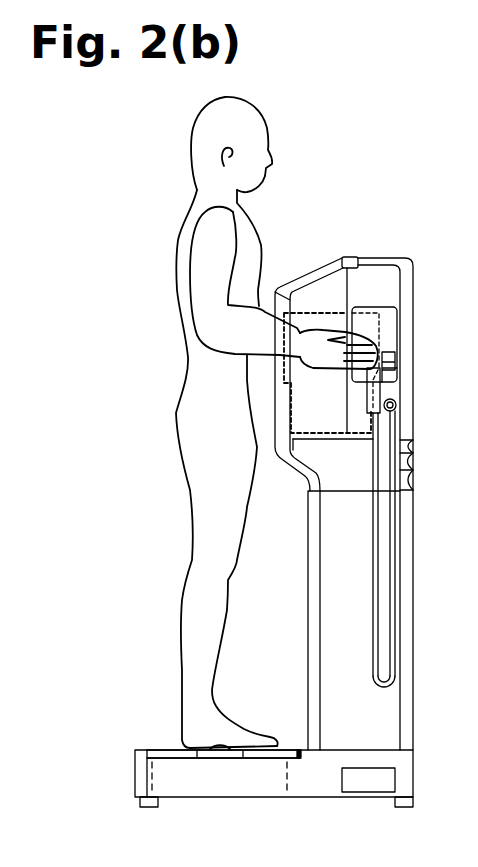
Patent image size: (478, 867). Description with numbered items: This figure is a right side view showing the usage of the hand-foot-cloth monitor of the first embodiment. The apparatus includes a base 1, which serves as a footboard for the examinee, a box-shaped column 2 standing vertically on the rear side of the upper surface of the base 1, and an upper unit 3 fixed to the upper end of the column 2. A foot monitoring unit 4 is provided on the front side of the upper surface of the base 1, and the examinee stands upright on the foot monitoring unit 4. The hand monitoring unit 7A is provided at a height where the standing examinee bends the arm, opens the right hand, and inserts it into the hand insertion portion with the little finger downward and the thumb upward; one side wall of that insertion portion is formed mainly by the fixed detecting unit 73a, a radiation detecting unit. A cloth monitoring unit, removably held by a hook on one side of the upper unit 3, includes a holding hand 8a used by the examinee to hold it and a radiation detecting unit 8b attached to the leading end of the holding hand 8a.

The base 1 is at (302, 780).
The column 2 is at (390, 694).
The upper unit 3 is at (376, 278).
The foot monitoring unit 4 is at (167, 753).
The hand monitoring unit 7A is at (324, 298).
The fixed detecting unit 73a is at (322, 418).
The holding hand 8a is at (380, 392).
The radiation detecting unit 8b is at (388, 323).